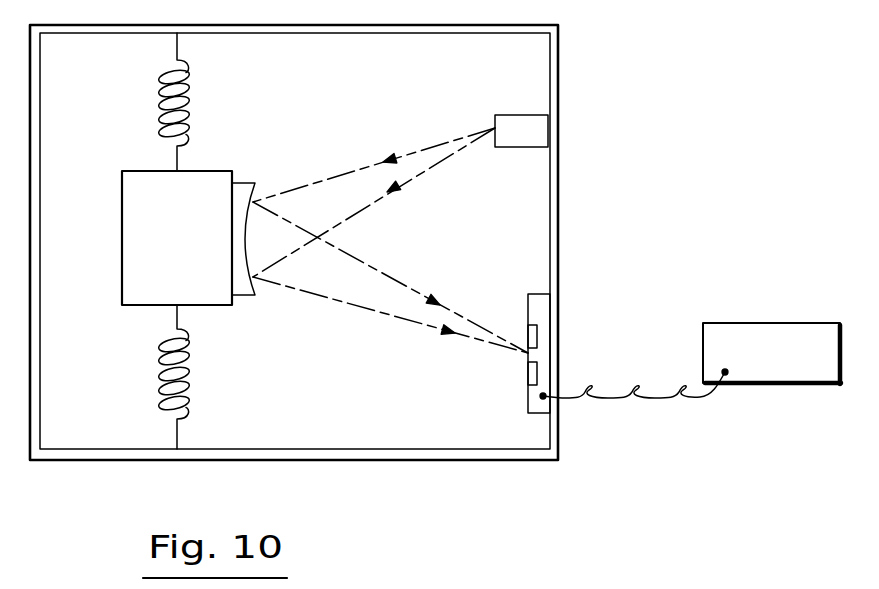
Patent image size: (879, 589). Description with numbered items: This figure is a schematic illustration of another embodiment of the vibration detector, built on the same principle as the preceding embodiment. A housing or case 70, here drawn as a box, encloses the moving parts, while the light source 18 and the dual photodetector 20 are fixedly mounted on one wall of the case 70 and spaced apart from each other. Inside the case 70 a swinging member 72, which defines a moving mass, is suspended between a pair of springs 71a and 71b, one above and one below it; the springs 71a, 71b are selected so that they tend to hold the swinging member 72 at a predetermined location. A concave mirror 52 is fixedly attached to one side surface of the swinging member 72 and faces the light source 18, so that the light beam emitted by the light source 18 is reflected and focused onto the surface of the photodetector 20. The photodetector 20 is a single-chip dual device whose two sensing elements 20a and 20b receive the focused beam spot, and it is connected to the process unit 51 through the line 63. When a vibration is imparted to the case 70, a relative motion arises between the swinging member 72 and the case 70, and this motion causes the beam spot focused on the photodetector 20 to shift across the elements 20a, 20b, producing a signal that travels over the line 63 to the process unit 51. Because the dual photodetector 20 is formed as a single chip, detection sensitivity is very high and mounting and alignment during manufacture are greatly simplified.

The case 70 is at (468, 453).
The spring 71a is at (192, 375).
The spring 71b is at (191, 91).
The swinging member 72 is at (126, 178).
The concave mirror 52 is at (242, 183).
The light source 18 is at (548, 130).
The dual photodetector 20 is at (543, 295).
The photodetector element 20a is at (528, 372).
The photodetector element 20b is at (528, 338).
The line 63 is at (585, 388).
The process unit 51 is at (703, 333).